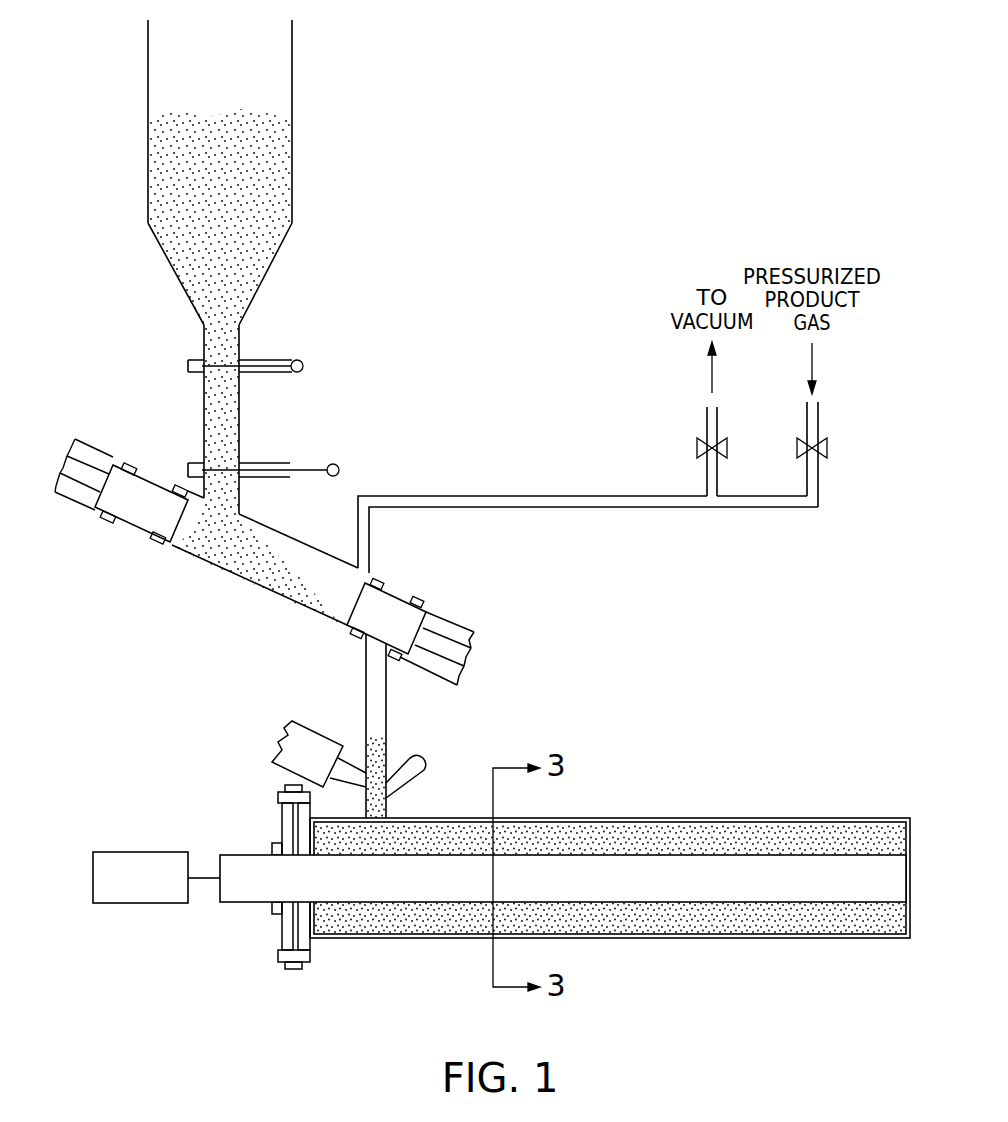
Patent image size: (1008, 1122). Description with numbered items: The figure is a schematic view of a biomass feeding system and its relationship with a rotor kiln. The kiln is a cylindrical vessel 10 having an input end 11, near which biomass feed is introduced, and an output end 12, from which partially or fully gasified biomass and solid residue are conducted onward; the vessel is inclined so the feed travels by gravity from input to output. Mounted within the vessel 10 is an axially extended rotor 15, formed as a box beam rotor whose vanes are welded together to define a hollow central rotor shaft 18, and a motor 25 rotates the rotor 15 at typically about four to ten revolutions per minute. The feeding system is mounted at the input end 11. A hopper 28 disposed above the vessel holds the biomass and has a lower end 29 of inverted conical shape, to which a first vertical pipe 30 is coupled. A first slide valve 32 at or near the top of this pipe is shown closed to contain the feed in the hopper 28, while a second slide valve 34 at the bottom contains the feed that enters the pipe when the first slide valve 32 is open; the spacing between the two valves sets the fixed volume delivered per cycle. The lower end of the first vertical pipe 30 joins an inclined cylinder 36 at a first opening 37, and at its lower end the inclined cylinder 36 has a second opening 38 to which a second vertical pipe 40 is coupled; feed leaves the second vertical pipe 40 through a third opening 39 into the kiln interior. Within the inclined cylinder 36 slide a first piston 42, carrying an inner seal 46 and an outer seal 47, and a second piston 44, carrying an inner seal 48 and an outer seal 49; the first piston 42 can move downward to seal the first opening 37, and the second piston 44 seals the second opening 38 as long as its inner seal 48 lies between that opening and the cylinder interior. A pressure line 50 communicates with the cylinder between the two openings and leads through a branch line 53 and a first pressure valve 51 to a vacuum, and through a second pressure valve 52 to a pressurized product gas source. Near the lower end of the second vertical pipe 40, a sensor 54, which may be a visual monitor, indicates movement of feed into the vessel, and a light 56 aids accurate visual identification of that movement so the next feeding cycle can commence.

The cylindrical vessel 10 is at (652, 813).
The input end 11 is at (372, 938).
The output end 12 is at (877, 818).
The rotor 15 is at (257, 922).
The central rotor shaft 18 is at (622, 891).
The motor 25 is at (113, 852).
The hopper 28 is at (148, 100).
The lower end 29 is at (263, 282).
The first vertical pipe 30 is at (218, 410).
The first slide valve 32 is at (303, 366).
The second slide valve 34 is at (339, 468).
The inclined cylinder 36 is at (237, 582).
The first opening 37 is at (232, 498).
The second opening 38 is at (376, 655).
The third opening 39 is at (378, 808).
The second vertical pipe 40 is at (365, 672).
The first piston 42 is at (145, 500).
The second piston 44 is at (390, 607).
The inner seal 46 is at (155, 542).
The outer seal 47 is at (108, 517).
The inner seal 48 is at (378, 580).
The outer seal 49 is at (418, 595).
The pressure line 50 is at (532, 497).
The first pressure valve 51 is at (697, 445).
The second pressure valve 52 is at (830, 447).
The branch line 53 is at (707, 470).
The sensor 54 is at (262, 733).
The light 56 is at (427, 760).